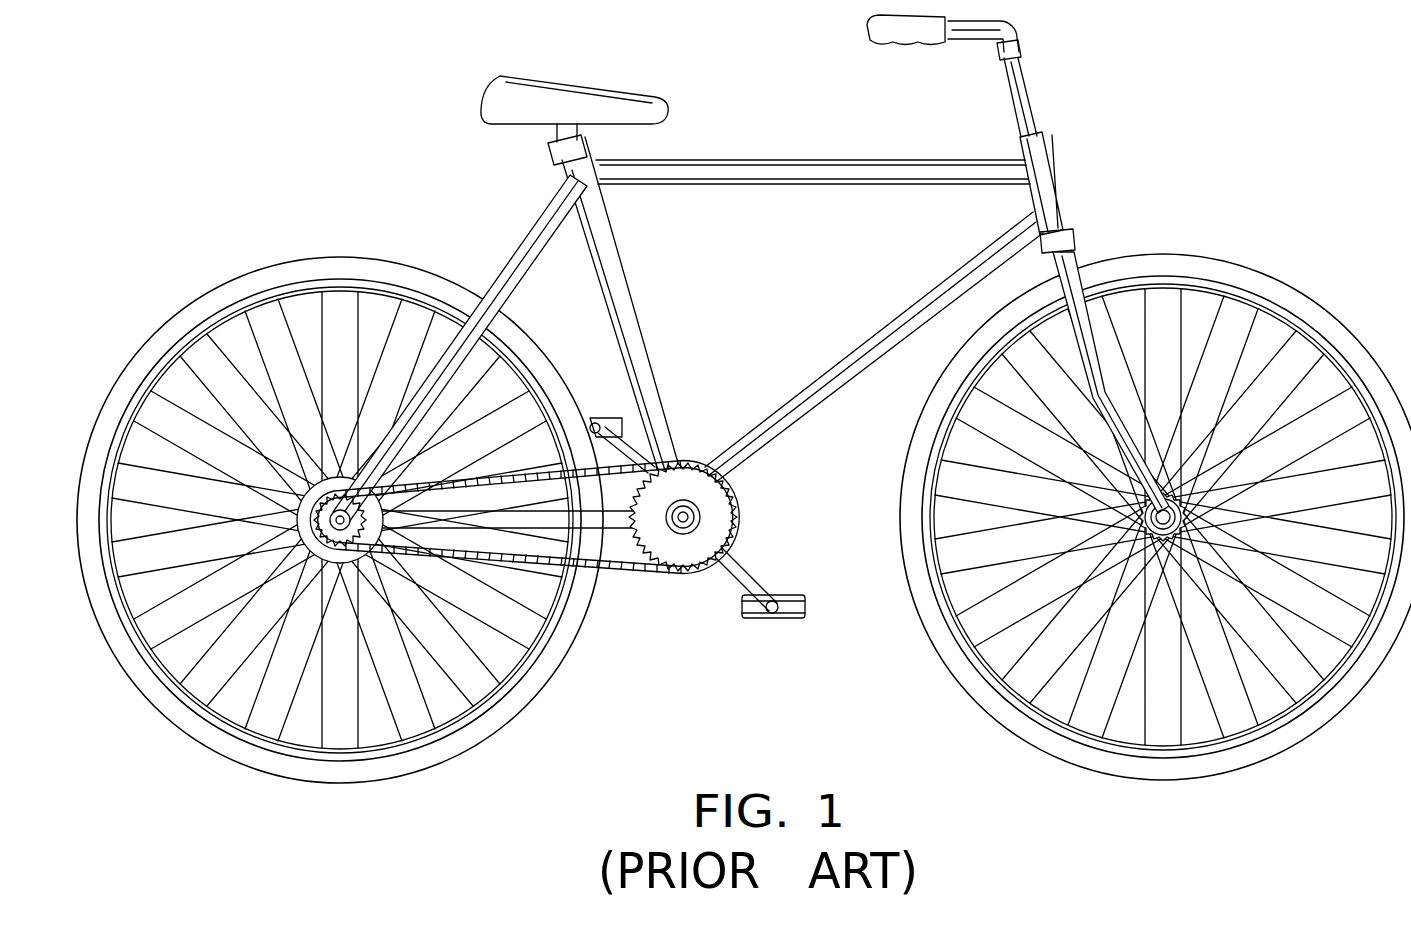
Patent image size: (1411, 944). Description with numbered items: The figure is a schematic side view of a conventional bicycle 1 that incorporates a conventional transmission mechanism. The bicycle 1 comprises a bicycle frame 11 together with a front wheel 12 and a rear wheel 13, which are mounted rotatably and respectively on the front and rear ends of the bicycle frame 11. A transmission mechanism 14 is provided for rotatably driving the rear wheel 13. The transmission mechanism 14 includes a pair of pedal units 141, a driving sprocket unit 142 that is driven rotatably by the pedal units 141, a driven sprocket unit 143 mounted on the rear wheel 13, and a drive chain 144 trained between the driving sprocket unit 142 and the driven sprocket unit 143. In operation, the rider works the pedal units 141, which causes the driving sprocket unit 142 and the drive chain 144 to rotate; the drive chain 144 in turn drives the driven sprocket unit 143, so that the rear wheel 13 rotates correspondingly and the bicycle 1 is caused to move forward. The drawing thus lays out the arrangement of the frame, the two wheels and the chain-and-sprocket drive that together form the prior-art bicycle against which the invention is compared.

The bicycle 1 is at (718, 99).
The bicycle frame 11 is at (828, 167).
The front wheel 12 is at (998, 704).
The rear wheel 13 is at (509, 703).
The transmission mechanism 14 is at (704, 461).
The pedal units 141 is at (789, 609).
The driving sprocket unit 142 is at (670, 543).
The driven sprocket unit 143 is at (282, 527).
The drive chain 144 is at (622, 573).